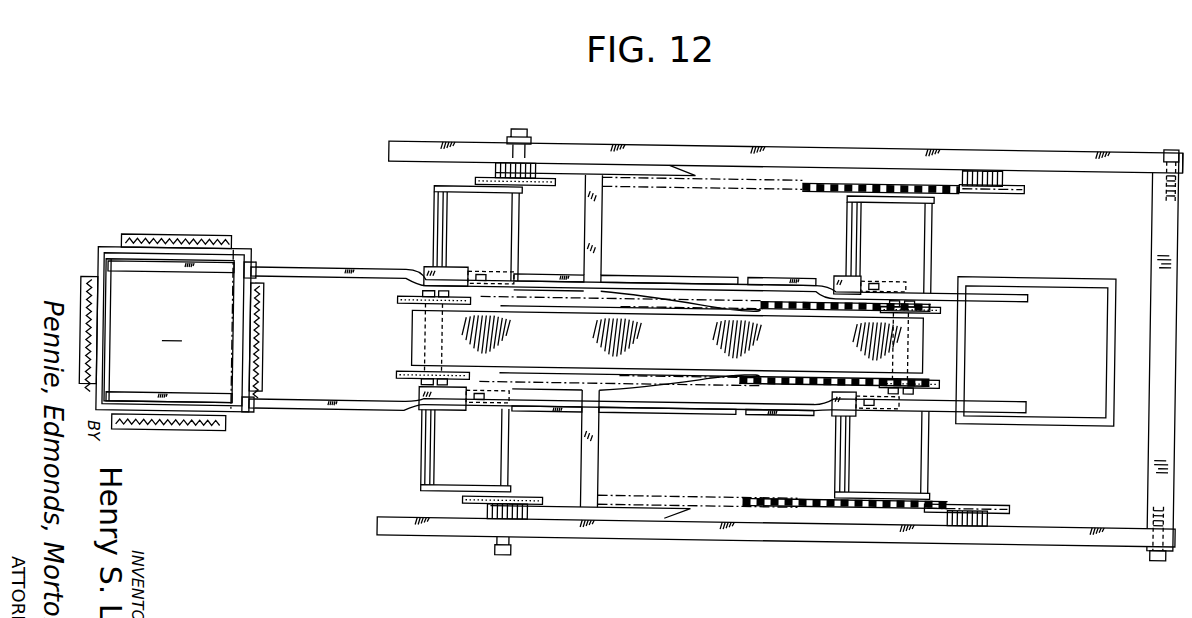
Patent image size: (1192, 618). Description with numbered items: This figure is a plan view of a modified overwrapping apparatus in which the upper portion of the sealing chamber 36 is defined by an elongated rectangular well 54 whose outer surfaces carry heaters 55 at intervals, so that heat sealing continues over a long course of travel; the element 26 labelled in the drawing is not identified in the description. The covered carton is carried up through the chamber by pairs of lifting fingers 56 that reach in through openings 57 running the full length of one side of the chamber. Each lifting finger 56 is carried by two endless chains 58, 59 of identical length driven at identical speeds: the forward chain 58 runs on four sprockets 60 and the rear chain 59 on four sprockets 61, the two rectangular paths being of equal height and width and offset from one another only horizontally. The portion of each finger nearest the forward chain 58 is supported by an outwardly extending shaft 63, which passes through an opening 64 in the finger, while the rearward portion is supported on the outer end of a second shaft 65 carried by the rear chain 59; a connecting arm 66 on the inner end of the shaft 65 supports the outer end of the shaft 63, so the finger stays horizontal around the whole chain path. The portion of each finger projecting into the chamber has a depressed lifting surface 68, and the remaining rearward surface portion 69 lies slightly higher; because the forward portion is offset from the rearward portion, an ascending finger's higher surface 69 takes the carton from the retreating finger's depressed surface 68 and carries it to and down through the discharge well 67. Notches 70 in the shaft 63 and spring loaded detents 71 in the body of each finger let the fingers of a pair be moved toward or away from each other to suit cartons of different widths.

The carriage frame 26 is at (169, 330).
The sealing chamber 36 is at (408, 330).
The rectangular well 54 is at (245, 257).
The heaters 55 is at (176, 244).
The lifting fingers 56 is at (338, 274).
The openings 57 is at (256, 270).
The endless chain 58 is at (800, 310).
The endless chain 59 is at (805, 190).
The sprockets 60 is at (402, 309).
The sprockets 61 is at (500, 184).
The shaft 63 is at (432, 228).
The opening 64 is at (428, 276).
The shaft 65 is at (517, 242).
The connecting arm 66 is at (500, 197).
The discharge well 67 is at (1039, 276).
The depressed lifting surface 68 is at (657, 260).
The rearward surface portion 69 is at (550, 278).
The notches 70 is at (442, 240).
The spring loaded detents 71 is at (480, 277).